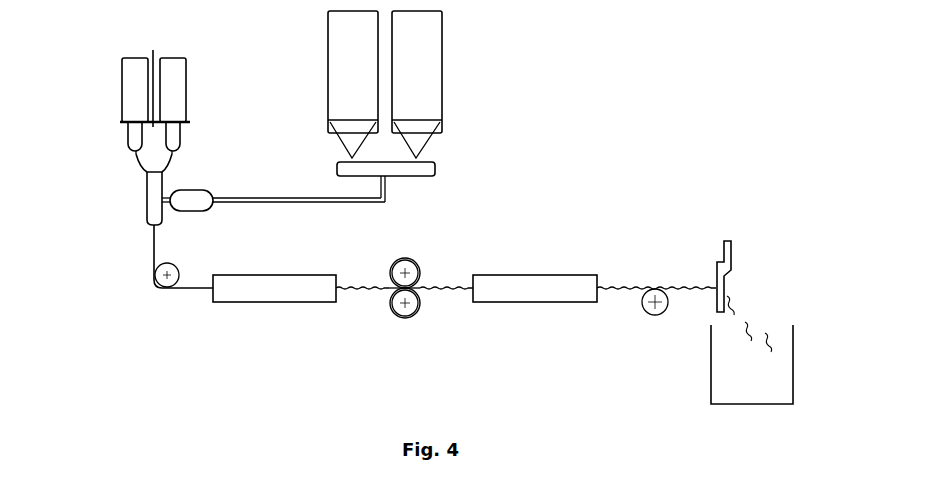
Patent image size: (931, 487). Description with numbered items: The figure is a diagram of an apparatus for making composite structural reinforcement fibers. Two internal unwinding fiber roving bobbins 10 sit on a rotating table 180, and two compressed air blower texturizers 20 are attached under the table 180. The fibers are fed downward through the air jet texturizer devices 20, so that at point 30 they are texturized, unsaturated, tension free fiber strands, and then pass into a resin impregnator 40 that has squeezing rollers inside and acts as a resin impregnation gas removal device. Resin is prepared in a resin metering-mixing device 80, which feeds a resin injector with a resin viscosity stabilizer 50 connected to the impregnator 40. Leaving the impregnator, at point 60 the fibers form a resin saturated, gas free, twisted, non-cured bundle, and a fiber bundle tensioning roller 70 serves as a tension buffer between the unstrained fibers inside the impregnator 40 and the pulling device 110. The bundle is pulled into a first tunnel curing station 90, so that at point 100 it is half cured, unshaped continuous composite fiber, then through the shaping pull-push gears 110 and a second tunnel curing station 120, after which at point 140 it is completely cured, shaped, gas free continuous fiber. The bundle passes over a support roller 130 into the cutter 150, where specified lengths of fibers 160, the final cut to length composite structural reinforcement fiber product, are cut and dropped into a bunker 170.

The internal unwinding fiber roving bobbins 10 is at (173, 72).
The compressed air blower texturizers 20 is at (175, 137).
The texturized fiber strands 30 is at (177, 157).
The resin impregnator 40 is at (144, 203).
The resin injector with resin viscosity stabilizer 50 is at (198, 196).
The resin saturated fiber bundle 60 is at (152, 253).
The fiber bundle tensioning roller 70 is at (156, 280).
The resin metering-mixing device 80 is at (340, 52).
The first tunnel curing station 90 is at (245, 302).
The half cured composite fiber bundle 100 is at (360, 292).
The shaping pull-push gears 110 is at (408, 318).
The second tunnel curing station 120 is at (510, 283).
The support roller 130 is at (650, 315).
The completely cured fiber bundle 140 is at (622, 283).
The cutter 150 is at (733, 250).
The cut composite structural reinforcement fibers 160 is at (750, 313).
The bunker 170 is at (773, 390).
The rotating table 180 is at (190, 120).